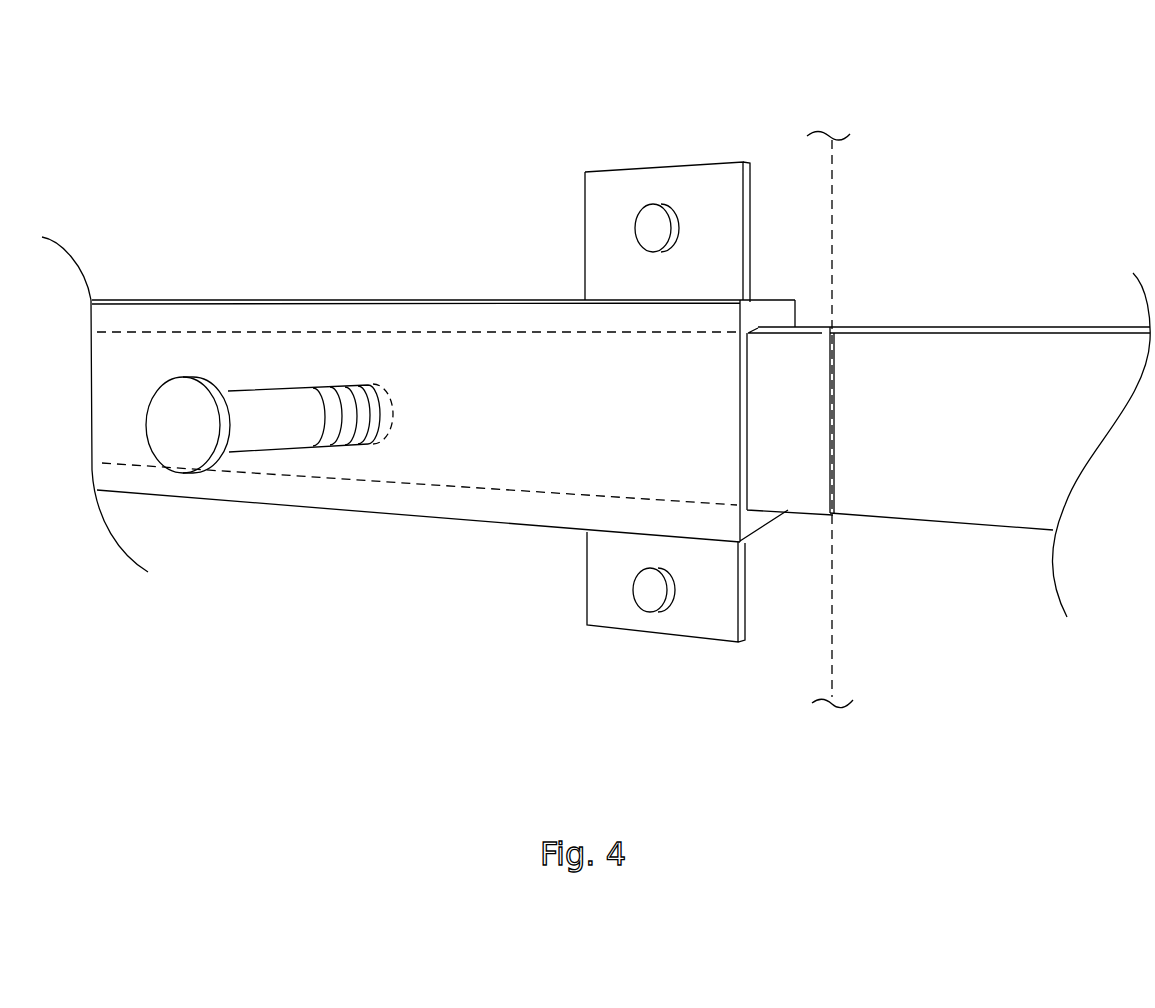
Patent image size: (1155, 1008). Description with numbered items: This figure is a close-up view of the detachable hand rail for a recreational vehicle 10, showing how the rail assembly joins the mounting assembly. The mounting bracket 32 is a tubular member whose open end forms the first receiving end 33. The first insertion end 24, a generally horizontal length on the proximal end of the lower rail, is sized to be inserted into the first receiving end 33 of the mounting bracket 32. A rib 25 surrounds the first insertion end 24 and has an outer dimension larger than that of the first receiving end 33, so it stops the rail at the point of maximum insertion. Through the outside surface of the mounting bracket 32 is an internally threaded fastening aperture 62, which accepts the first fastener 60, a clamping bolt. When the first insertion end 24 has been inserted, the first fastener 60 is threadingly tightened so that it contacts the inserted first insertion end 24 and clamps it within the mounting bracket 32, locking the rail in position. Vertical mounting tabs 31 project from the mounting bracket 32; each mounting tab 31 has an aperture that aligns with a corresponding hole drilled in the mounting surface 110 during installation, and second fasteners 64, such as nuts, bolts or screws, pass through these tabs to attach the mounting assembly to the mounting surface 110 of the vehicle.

The detachable hand rail for a recreational vehicle 10 is at (1037, 182).
The first insertion end 24 is at (928, 332).
The rib 25 is at (833, 325).
The mounting tab 31 is at (608, 183).
The mounting bracket 32 is at (498, 302).
The first receiving end 33 is at (775, 523).
The first fastener 60 is at (191, 413).
The fastening aperture 62 is at (366, 388).
The second fastener 64 is at (667, 227).
The mounting surface 110 is at (810, 253).